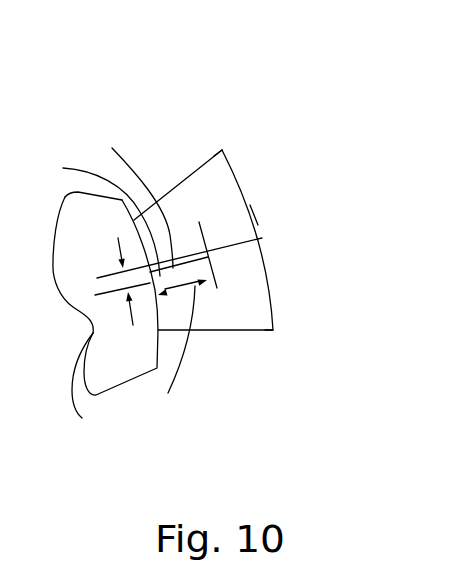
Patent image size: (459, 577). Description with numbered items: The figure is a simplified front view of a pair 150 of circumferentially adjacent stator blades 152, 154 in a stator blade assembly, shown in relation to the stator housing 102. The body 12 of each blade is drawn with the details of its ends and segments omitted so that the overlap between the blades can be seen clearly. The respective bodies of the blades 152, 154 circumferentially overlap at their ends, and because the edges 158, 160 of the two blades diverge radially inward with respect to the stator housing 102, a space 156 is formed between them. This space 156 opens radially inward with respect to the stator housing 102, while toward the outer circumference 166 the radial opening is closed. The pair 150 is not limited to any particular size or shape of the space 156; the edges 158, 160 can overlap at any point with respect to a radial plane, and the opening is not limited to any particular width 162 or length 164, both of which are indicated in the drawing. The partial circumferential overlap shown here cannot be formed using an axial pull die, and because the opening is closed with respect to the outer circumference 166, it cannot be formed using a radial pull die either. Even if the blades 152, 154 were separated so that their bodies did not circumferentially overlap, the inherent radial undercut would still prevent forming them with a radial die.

The pair of adjacent blades 150 is at (133, 88).
The blade body 12 is at (237, 205).
The stator housing 102 is at (102, 263).
The blade 152 is at (222, 150).
The blade 154 is at (273, 330).
The space 156 is at (91, 217).
The edge 158 is at (128, 197).
The edge 160 is at (245, 241).
The width 162 is at (83, 389).
The length 164 is at (178, 351).
The outer circumference 166 is at (260, 207).